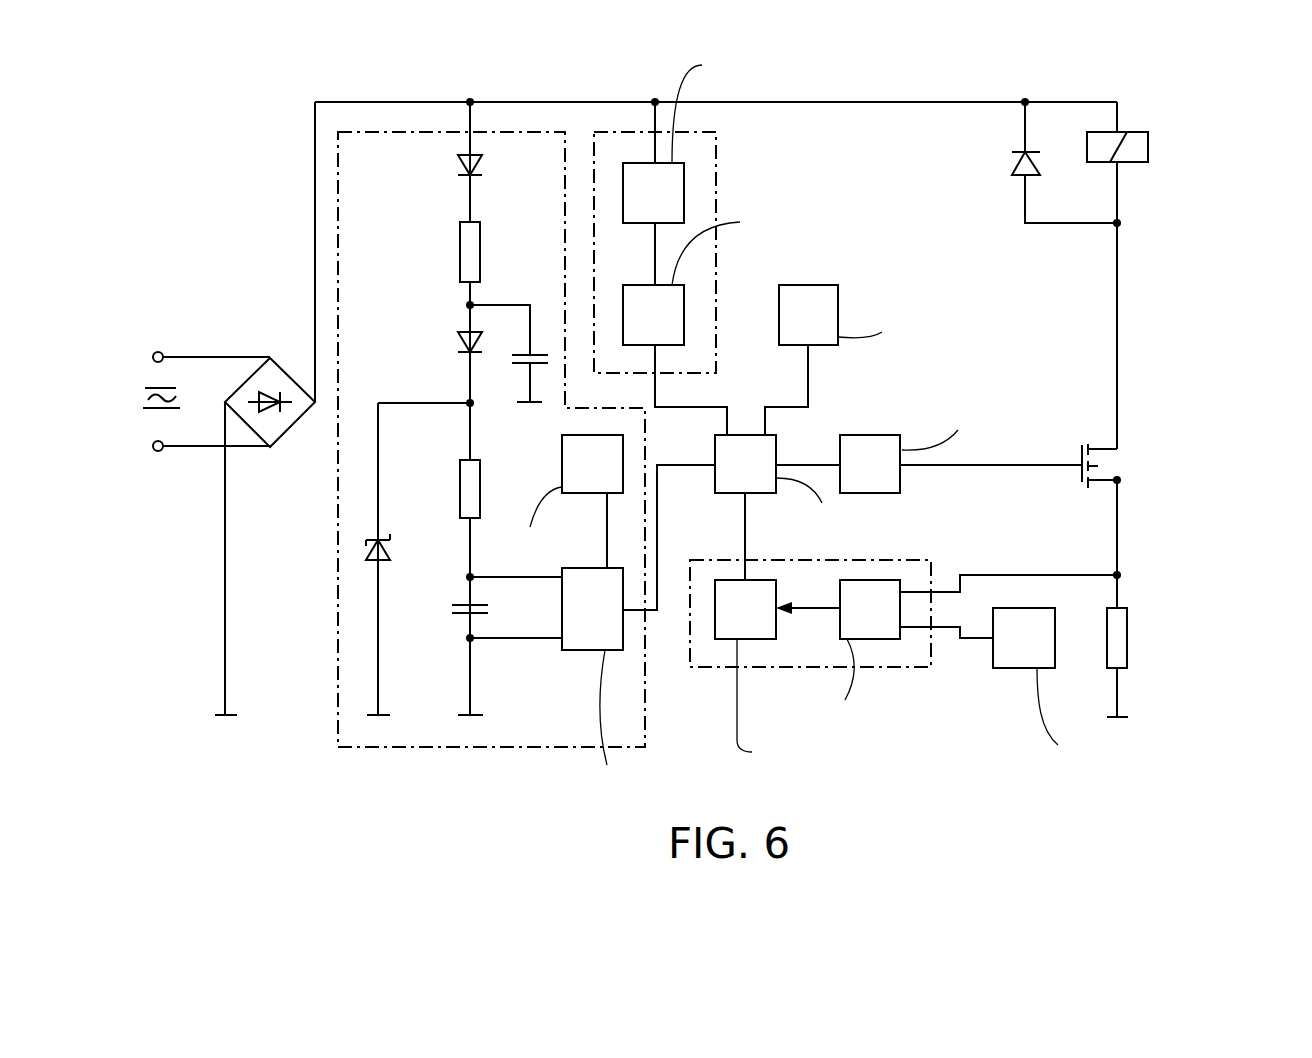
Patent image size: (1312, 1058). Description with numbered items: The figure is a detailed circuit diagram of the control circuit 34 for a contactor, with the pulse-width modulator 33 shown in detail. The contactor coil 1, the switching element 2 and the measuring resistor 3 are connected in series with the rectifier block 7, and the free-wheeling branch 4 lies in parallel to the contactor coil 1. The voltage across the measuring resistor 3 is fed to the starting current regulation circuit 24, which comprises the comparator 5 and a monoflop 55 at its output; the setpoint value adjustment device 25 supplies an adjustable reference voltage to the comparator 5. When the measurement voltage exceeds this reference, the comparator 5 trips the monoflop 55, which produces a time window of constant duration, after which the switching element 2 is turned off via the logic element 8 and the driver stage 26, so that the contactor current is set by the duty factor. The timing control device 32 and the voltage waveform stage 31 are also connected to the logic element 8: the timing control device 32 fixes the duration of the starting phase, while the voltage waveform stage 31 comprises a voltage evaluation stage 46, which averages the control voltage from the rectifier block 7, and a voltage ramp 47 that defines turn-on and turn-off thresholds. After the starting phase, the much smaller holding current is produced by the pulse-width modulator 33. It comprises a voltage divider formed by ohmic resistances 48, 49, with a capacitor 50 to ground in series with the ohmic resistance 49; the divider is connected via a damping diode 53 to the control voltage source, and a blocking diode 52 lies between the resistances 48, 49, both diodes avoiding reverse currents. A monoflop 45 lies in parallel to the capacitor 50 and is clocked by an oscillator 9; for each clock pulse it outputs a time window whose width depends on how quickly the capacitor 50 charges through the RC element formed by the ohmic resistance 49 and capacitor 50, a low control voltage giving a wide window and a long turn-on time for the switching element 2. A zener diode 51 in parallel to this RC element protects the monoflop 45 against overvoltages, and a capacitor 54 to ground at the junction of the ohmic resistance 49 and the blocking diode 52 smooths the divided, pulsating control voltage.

The contactor coil 1 is at (1148, 150).
The switching element 2 is at (1113, 457).
The measuring resistor 3 is at (1127, 640).
The free-wheeling branch 4 is at (1012, 167).
The comparator 5 is at (840, 622).
The rectifier block 7 is at (283, 428).
The logic element 8 is at (715, 480).
The oscillator 9 is at (562, 460).
The starting current regulation circuit 24 is at (920, 560).
The setpoint value adjustment device 25 is at (1020, 668).
The driver stage 26 is at (872, 435).
The voltage waveform stage 31 is at (716, 173).
The timing control device 32 is at (806, 285).
The pulse-width modulator 33 is at (645, 745).
The control circuit 34 is at (405, 100).
The monoflop 45 is at (582, 650).
The voltage evaluation stage 46 is at (650, 223).
The voltage ramp 47 is at (684, 303).
The ohmic resistance 48 is at (460, 275).
The ohmic resistance 49 is at (460, 501).
The capacitor 50 is at (452, 605).
The zener diode 51 is at (390, 557).
The blocking diode 52 is at (458, 340).
The damping diode 53 is at (458, 160).
The capacitor 54 is at (518, 365).
The monoflop 55 is at (770, 582).